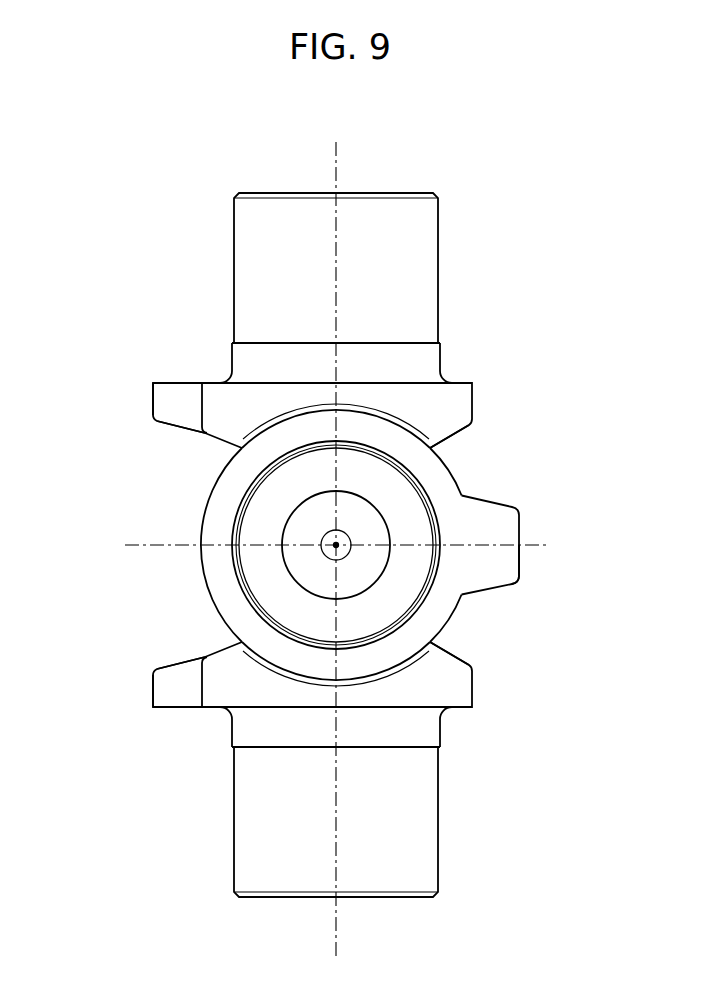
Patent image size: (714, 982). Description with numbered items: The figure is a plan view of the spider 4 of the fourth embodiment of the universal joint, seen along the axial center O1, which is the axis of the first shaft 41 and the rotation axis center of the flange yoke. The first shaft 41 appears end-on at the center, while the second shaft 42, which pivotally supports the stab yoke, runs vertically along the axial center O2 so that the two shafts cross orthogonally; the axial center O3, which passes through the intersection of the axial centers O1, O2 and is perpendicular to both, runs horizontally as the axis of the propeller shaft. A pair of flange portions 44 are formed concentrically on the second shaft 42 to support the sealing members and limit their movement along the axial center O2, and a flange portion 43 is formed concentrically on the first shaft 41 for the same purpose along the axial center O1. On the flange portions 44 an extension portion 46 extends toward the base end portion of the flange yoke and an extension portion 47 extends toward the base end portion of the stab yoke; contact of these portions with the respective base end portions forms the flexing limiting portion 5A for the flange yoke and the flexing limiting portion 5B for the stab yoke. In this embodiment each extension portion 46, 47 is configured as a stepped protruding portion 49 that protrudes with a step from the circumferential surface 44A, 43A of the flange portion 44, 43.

The spider 4 is at (153, 258).
The first shaft 41 is at (280, 492).
The second shaft 42 is at (387, 265).
The flange portion 43 is at (281, 545).
The circumferential surface of the flange portion 43A is at (205, 582).
The flange portion 44 is at (450, 397).
The circumferential surface of the flange portion 44A is at (473, 412).
The extension portion 46 is at (151, 402).
The extension portion 47 is at (522, 515).
The stepped protruding portion 49 is at (177, 398).
The flexing limiting portion 5A is at (141, 418).
The flexing limiting portion 5B is at (527, 553).
The axial center O1 is at (336, 545).
The axial center O2 is at (335, 538).
The axial center O3 is at (355, 545).